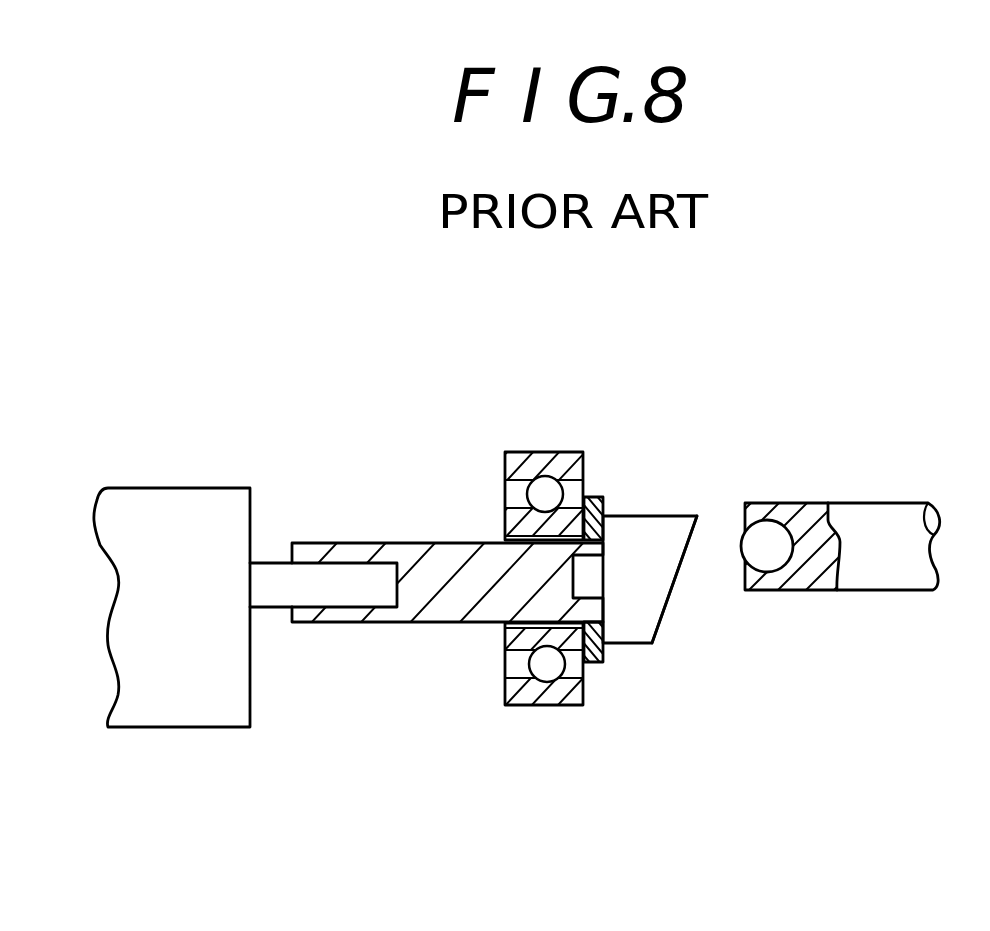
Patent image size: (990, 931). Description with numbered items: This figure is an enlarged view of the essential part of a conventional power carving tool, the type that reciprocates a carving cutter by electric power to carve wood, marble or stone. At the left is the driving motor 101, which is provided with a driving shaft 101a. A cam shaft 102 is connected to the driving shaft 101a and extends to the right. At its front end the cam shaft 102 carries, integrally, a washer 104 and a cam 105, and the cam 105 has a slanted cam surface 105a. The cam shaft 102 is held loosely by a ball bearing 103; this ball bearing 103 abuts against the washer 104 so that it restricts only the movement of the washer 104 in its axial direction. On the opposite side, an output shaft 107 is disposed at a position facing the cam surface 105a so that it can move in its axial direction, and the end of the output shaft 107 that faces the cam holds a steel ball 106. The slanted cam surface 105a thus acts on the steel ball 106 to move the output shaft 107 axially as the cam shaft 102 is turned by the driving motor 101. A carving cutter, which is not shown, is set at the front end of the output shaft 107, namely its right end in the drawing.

The driving motor 101 is at (172, 710).
The driving shaft 101a is at (338, 593).
The cam shaft 102 is at (423, 543).
The ball bearing 103 is at (530, 708).
The washer 104 is at (600, 662).
The cam 105 is at (643, 603).
The cam surface 105a is at (677, 582).
The steel ball 106 is at (765, 537).
The output shaft 107 is at (893, 523).